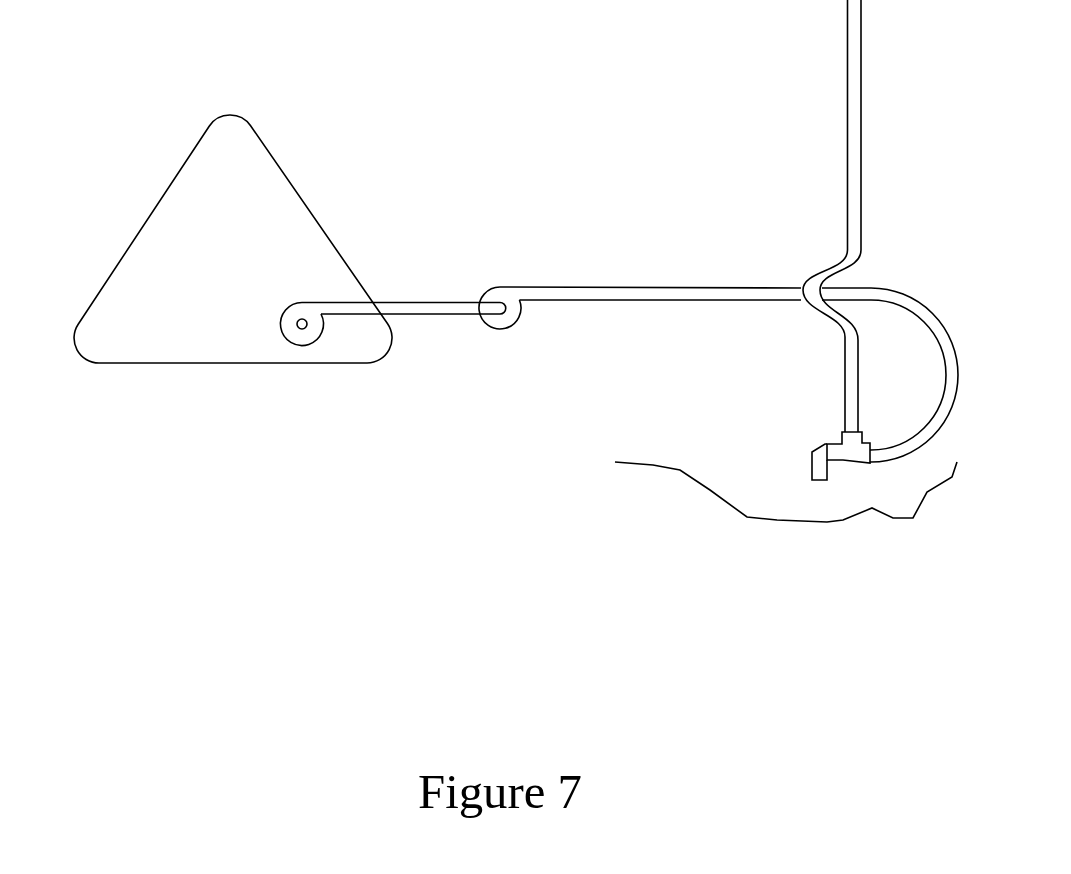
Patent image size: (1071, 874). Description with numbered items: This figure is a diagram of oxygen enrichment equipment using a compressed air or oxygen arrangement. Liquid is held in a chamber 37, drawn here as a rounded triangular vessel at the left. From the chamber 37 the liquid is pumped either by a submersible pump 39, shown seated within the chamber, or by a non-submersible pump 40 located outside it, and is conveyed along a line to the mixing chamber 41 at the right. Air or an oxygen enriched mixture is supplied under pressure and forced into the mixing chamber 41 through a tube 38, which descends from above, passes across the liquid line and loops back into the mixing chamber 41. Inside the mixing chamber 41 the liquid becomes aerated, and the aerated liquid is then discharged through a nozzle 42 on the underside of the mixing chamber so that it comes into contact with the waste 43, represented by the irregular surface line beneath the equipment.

The chamber 37 is at (238, 111).
The tube 38 is at (845, 138).
The submersible pump 39 is at (292, 350).
The non-submersible pump 40 is at (496, 335).
The mixing chamber 41 is at (819, 442).
The nozzle 42 is at (806, 461).
The waste 43 is at (684, 481).